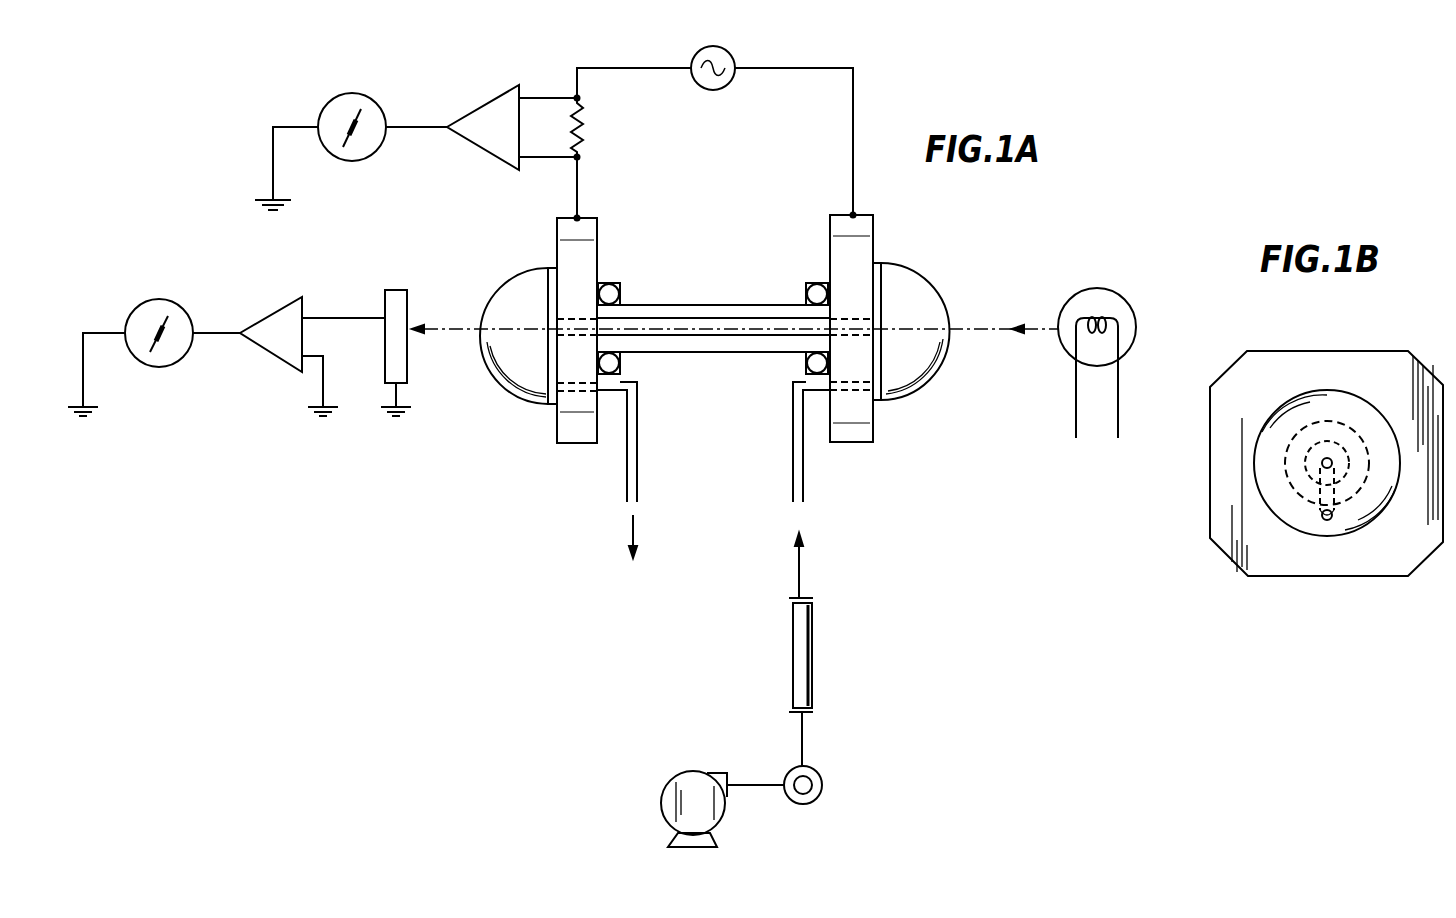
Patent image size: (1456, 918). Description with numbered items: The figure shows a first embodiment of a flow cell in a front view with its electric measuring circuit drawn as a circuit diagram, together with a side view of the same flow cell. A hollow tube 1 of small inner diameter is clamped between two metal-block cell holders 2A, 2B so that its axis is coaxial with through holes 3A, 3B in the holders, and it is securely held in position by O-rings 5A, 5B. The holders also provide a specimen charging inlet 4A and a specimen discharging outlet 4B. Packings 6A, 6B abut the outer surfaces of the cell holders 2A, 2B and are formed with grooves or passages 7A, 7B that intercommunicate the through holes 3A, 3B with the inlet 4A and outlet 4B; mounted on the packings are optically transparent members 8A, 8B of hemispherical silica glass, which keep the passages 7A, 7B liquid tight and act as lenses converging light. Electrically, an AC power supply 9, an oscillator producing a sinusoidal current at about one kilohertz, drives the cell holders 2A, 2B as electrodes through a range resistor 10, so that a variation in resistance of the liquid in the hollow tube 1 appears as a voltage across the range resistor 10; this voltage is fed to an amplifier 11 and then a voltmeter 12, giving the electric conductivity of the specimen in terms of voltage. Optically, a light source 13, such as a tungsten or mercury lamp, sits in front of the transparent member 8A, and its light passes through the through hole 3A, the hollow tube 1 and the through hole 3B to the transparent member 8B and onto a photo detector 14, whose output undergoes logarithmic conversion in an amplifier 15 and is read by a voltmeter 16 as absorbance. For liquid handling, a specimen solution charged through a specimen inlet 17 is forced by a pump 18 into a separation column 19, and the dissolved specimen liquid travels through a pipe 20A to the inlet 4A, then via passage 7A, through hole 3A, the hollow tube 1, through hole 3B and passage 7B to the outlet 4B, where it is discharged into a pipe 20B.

In FIG. 1A, the hollow tube 1 is at (697, 305).
In FIG. 1B, the hollow tube 1 is at (1322, 463).
In FIG. 1A, the cell holder 2A is at (852, 443).
In FIG. 1B, the cell holder 2A is at (1275, 463).
In FIG. 1A, the cell holder 2B is at (578, 445).
In FIG. 1B, the cell holder 2B is at (1210, 505).
In FIG. 1A, the through hole 3A is at (847, 320).
In FIG. 1B, the through hole 3A is at (1364, 386).
In FIG. 1A, the through hole 3B is at (575, 320).
In FIG. 1B, the through hole 3B is at (1327, 458).
In FIG. 1A, the specimen charging inlet 4A is at (850, 395).
In FIG. 1B, the specimen charging inlet 4A is at (1327, 584).
In FIG. 1A, the specimen discharging outlet 4B is at (577, 392).
In FIG. 1B, the specimen discharging outlet 4B is at (1327, 522).
In FIG. 1A, the O-ring 5A is at (810, 282).
In FIG. 1B, the O-ring 5A is at (1263, 548).
In FIG. 1A, the O-ring 5B is at (606, 282).
In FIG. 1B, the O-ring 5B is at (1293, 487).
In FIG. 1A, the packing 6A is at (880, 291).
In FIG. 1A, the packing 6B is at (548, 279).
In FIG. 1A, the groove or passage 7A is at (878, 362).
In FIG. 1B, the groove or passage 7A is at (1384, 568).
In FIG. 1A, the groove or passage 7B is at (540, 371).
In FIG. 1B, the groove or passage 7B is at (1333, 508).
In FIG. 1A, the optically transparent member 8A is at (942, 306).
In FIG. 1B, the optically transparent member 8A is at (1301, 420).
In FIG. 1A, the optically transparent member 8B is at (490, 301).
In FIG. 1B, the optically transparent member 8B is at (1283, 405).
In FIG. 1A, the AC power supply 9 is at (735, 80).
In FIG. 1A, the range resistor 10 is at (585, 130).
In FIG. 1A, the amplifier 11 is at (488, 101).
In FIG. 1A, the voltmeter 12 is at (395, 99).
In FIG. 1A, the light source 13 is at (1122, 303).
In FIG. 1A, the photo detector 14 is at (385, 301).
In FIG. 1A, the amplifier 15 is at (278, 358).
In FIG. 1A, the voltmeter 16 is at (185, 311).
In FIG. 1A, the specimen inlet 17 is at (822, 781).
In FIG. 1A, the pump 18 is at (688, 772).
In FIG. 1A, the separation column 19 is at (814, 658).
In FIG. 1A, the pipe 20A is at (793, 468).
In FIG. 1A, the pipe 20B is at (638, 427).